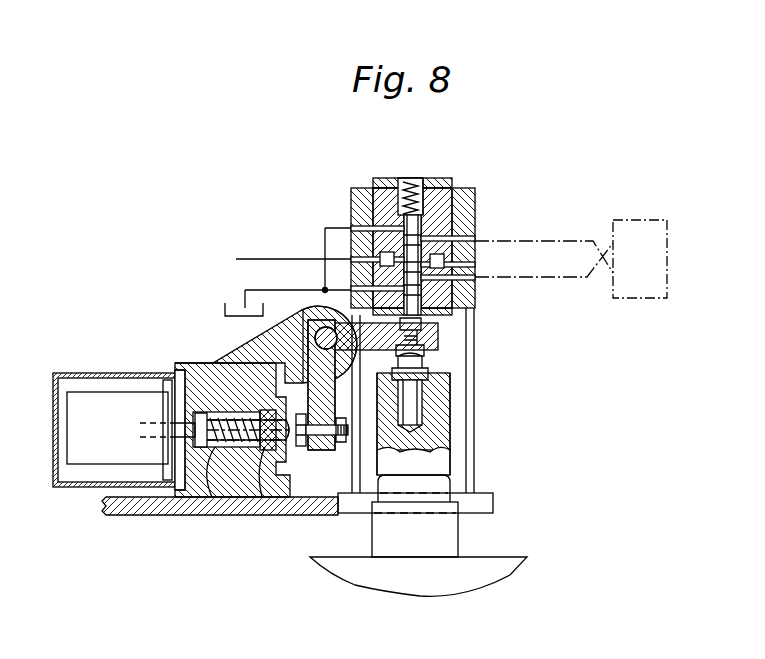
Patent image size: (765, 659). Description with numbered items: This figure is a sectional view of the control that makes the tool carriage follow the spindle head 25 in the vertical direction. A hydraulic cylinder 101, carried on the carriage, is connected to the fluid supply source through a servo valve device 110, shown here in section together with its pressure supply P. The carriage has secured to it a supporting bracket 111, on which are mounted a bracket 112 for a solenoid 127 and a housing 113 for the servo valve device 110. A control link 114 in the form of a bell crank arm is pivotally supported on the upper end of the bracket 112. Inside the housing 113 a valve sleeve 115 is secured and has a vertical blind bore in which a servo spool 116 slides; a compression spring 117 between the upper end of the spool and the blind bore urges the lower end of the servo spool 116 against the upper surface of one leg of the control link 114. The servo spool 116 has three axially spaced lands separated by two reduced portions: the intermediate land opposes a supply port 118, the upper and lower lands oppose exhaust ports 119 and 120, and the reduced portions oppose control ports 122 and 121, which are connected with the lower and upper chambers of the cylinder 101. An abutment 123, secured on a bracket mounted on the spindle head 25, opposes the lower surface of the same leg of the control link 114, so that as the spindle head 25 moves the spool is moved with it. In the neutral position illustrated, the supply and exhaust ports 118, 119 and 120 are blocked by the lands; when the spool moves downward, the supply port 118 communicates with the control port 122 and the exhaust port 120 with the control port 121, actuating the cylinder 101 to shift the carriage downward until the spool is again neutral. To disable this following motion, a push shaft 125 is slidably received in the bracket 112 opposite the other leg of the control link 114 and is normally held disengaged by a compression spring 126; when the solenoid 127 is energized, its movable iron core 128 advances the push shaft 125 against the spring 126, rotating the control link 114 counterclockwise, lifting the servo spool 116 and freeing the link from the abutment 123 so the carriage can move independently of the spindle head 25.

The spindle head 25 is at (490, 560).
The hydraulic cylinder 101 is at (653, 220).
The servo valve device 110 is at (481, 199).
The supporting bracket 111 is at (157, 515).
The bracket 112 is at (233, 360).
The housing 113 is at (473, 343).
The control link 114 is at (325, 450).
The valve sleeve 115 is at (400, 180).
The servo spool 116 is at (476, 262).
The compression spring 117 is at (428, 182).
The supply port 118 is at (351, 252).
The exhaust port 119 is at (351, 223).
The exhaust port 120 is at (323, 288).
The control port 121 is at (476, 282).
The control port 122 is at (476, 232).
The abutment 123 is at (451, 408).
The push shaft 125 is at (263, 492).
The compression spring 126 is at (216, 496).
The solenoid 127 is at (93, 400).
The movable iron core 128 is at (160, 393).
The pressure source P is at (282, 261).